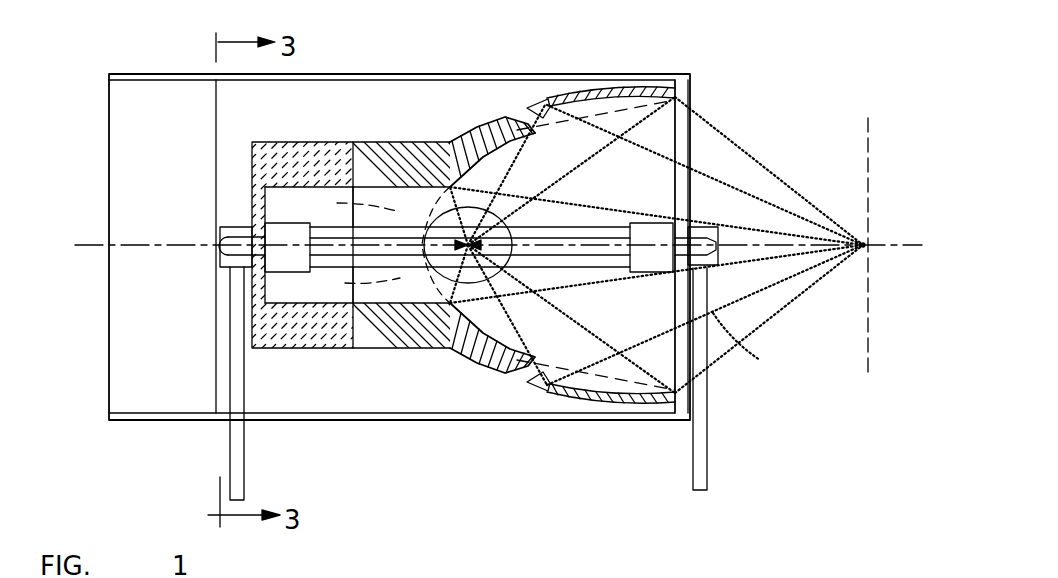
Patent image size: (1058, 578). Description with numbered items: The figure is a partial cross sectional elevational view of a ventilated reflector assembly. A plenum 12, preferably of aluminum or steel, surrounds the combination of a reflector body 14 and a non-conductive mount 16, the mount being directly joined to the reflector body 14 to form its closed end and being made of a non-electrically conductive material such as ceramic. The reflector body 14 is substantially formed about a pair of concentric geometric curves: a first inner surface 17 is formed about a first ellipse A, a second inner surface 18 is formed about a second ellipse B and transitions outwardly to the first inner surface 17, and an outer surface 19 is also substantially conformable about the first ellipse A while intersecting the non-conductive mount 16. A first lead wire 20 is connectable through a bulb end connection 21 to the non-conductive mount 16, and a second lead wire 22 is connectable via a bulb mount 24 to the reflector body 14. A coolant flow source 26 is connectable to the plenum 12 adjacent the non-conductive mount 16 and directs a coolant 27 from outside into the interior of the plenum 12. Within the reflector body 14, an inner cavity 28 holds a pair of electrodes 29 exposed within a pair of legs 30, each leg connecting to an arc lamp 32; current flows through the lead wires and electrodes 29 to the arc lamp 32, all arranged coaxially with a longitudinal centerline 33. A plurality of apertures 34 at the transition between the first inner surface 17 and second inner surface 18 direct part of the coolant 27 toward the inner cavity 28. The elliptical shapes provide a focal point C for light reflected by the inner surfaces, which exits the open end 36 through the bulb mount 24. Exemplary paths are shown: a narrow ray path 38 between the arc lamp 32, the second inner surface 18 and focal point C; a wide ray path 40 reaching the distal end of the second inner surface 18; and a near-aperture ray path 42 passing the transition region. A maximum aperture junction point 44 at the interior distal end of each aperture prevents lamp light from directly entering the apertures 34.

The plenum 12 is at (294, 421).
The reflector body 14 is at (393, 138).
The non-conductive mount 16 is at (318, 155).
The first inner surface 17 is at (589, 106).
The second inner surface 18 is at (460, 352).
The outer surface 19 is at (549, 100).
The first lead wire 20 is at (238, 462).
The bulb end connection 21 is at (244, 240).
The second lead wire 22 is at (695, 491).
The bulb mount 24 is at (693, 94).
The coolant flow source 26 is at (82, 103).
The coolant 27 is at (311, 99).
The inner cavity 28 is at (373, 291).
The electrodes 29 is at (598, 240).
The legs 30 is at (567, 226).
The arc lamp 32 is at (467, 135).
The longitudinal centerline 33 is at (897, 243).
The apertures 34 is at (512, 112).
The open end 36 is at (660, 86).
The narrow ray path 38 is at (586, 284).
The wide ray path 40 is at (782, 315).
The near-aperture ray path 42 is at (747, 359).
The maximum aperture junction point 44 is at (542, 362).
The first ellipse A is at (357, 236).
The second ellipse B is at (614, 74).
The focal point C is at (867, 250).